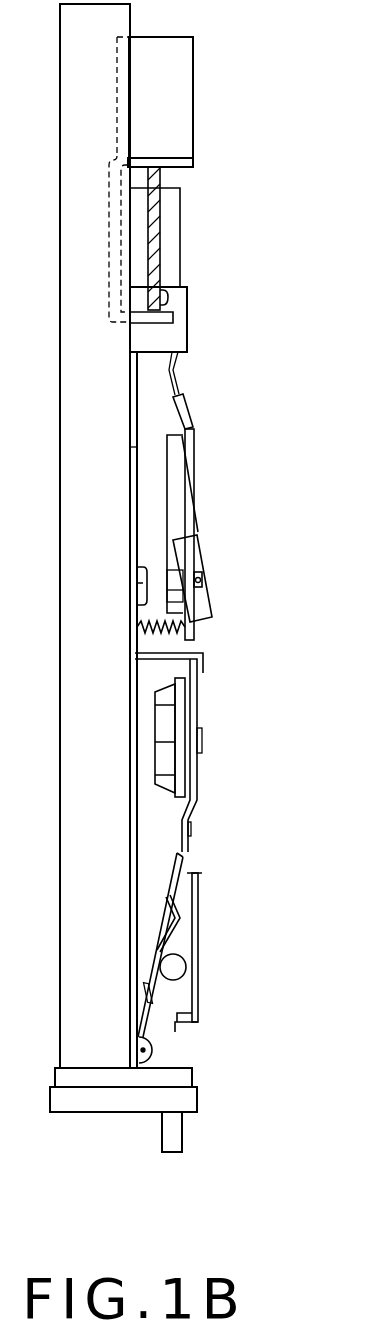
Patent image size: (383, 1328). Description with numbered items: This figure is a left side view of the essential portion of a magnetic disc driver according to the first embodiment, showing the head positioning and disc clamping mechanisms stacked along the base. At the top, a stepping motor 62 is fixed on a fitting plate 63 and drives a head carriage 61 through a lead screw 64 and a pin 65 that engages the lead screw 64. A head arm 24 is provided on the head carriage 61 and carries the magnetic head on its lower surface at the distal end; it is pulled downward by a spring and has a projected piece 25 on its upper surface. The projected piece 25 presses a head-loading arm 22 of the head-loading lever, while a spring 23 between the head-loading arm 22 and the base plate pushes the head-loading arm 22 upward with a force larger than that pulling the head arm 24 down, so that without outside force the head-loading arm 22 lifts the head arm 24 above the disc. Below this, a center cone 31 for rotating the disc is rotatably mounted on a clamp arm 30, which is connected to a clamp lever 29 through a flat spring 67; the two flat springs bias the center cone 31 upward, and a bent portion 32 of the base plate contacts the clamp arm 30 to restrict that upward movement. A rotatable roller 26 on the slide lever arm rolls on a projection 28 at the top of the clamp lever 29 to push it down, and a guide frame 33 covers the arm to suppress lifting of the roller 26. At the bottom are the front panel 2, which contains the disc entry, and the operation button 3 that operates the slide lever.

The front panel 2 is at (187, 1100).
The operation button 3 is at (177, 1135).
The head-loading arm 22 is at (188, 548).
The spring 23 is at (167, 647).
The head arm 24 is at (188, 408).
The projected piece 25 is at (202, 582).
The roller 26 is at (173, 967).
The projection 28 is at (173, 907).
The clamp lever 29 is at (188, 880).
The clamp arm 30 is at (197, 792).
The center cone 31 is at (173, 772).
The bent portion 32 is at (203, 653).
The guide frame 33 is at (200, 992).
The head carriage 61 is at (172, 342).
The stepping motor 62 is at (178, 87).
The fitting plate 63 is at (183, 161).
The lead screw 64 is at (158, 225).
The pin 65 is at (170, 302).
The flat spring 67 is at (188, 848).